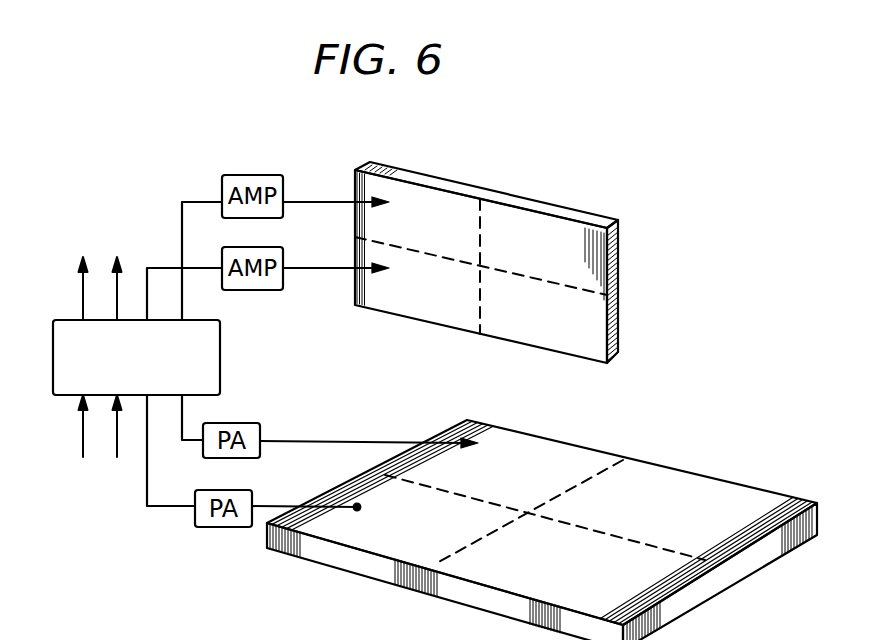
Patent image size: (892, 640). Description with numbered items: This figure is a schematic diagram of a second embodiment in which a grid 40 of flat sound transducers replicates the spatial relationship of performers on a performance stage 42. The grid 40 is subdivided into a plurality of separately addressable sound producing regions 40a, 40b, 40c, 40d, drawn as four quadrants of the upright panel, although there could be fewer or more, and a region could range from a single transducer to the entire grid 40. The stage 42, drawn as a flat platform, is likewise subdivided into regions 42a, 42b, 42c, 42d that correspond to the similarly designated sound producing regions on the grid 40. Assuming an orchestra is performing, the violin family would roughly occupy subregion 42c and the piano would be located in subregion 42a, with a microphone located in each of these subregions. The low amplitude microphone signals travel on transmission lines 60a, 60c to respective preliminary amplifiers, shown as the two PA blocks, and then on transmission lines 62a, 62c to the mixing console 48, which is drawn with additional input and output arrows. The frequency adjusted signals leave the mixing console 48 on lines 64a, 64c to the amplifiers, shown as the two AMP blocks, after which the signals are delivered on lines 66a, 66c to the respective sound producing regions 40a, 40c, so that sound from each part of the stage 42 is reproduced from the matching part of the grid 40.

The grid 40 is at (641, 271).
The sound producing region 40a is at (446, 232).
The sound producing region 40b is at (563, 259).
The sound producing region 40c is at (446, 297).
The sound producing region 40d is at (568, 327).
The stage 42 is at (676, 443).
The stage region 42a is at (533, 485).
The stage region 42b is at (686, 522).
The stage region 42c is at (426, 544).
The stage region 42d is at (591, 612).
The mixing console 48 is at (220, 357).
The transmission line 60a is at (330, 441).
The transmission line 60c is at (276, 505).
The transmission line 62a is at (182, 413).
The transmission line 62c is at (156, 507).
The line 64a is at (182, 200).
The line 64c is at (147, 267).
The line 66a is at (318, 200).
The line 66c is at (318, 267).